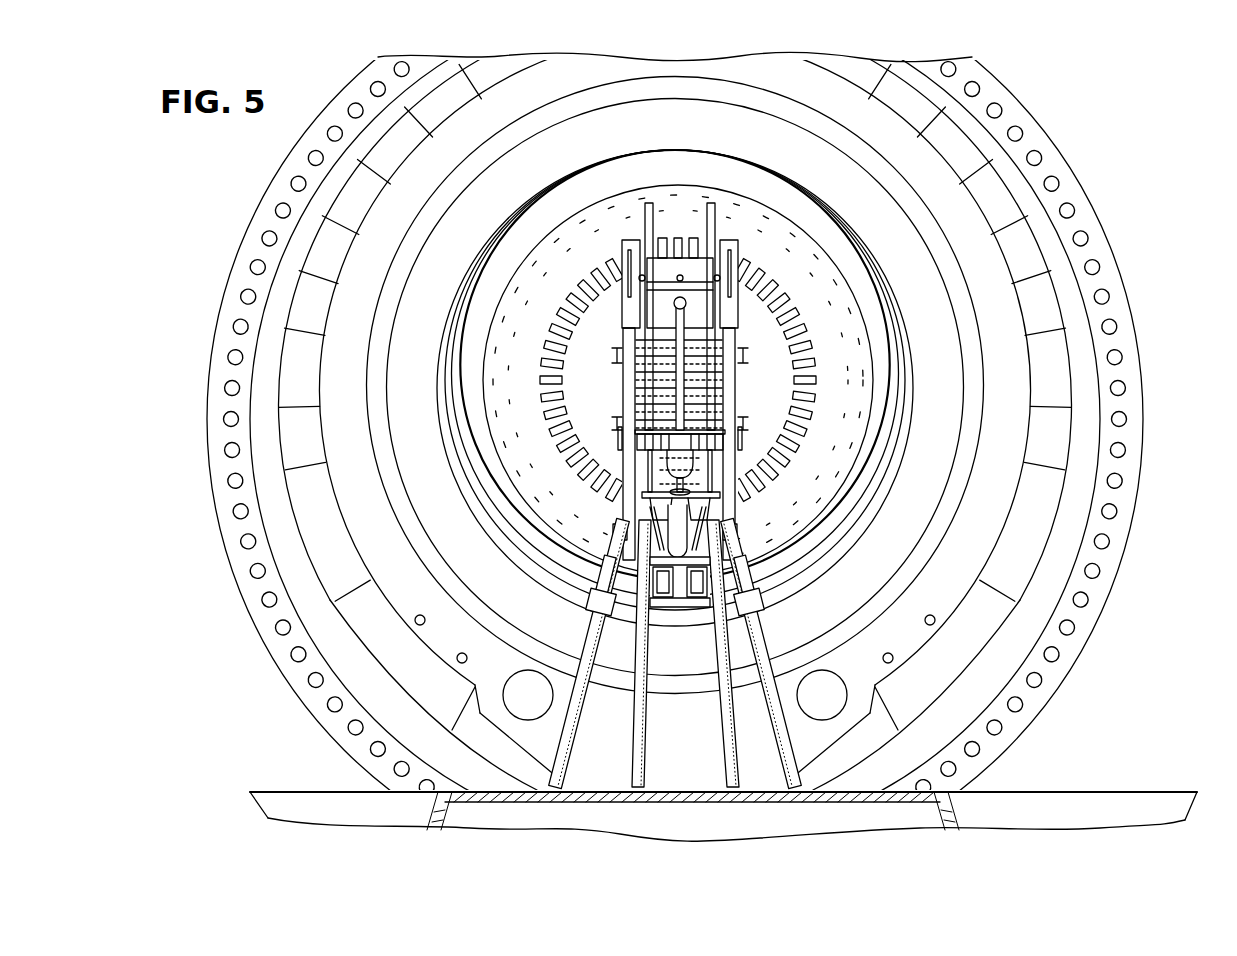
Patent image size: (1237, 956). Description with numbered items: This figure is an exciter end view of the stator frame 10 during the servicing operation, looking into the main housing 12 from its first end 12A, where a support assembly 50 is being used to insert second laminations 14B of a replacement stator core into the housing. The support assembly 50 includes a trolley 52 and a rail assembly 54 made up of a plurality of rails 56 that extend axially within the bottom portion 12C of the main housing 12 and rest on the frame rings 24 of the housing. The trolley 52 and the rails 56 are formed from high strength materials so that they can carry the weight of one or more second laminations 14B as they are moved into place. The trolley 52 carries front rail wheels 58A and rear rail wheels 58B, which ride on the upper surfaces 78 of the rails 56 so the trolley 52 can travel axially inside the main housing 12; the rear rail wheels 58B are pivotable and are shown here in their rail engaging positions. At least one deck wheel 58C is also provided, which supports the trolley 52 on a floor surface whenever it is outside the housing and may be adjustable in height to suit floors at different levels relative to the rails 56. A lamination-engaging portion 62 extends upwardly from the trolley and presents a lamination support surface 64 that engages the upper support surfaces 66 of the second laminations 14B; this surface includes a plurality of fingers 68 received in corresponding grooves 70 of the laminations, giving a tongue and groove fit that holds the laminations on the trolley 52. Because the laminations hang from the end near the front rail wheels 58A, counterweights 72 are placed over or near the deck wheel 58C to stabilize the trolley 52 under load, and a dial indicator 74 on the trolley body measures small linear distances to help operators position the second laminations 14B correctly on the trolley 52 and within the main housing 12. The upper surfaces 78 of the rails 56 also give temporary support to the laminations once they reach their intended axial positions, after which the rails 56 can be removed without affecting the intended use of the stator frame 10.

The stator frame 10 is at (618, 478).
The main housing 12 is at (710, 443).
The first end 12A is at (1128, 436).
The bottom portion 12C is at (859, 676).
The second laminations 14B is at (675, 350).
The frame rings 24 is at (512, 548).
The support assembly 50 is at (706, 470).
The trolley 52 is at (730, 365).
The rail assembly 54 is at (743, 752).
The rails 56 is at (687, 673).
The front rail wheels 58A is at (633, 527).
The rear rail wheels 58B is at (585, 603).
The deck wheel 58C is at (697, 610).
The lamination-engaging portion 62 is at (663, 255).
The lamination support surface 64 is at (680, 257).
The upper support surfaces 66 is at (657, 255).
The fingers 68 is at (733, 260).
The grooves 70 is at (597, 267).
The counterweights 72 is at (720, 392).
The dial indicator 74 is at (673, 300).
The upper surfaces 78 is at (598, 627).